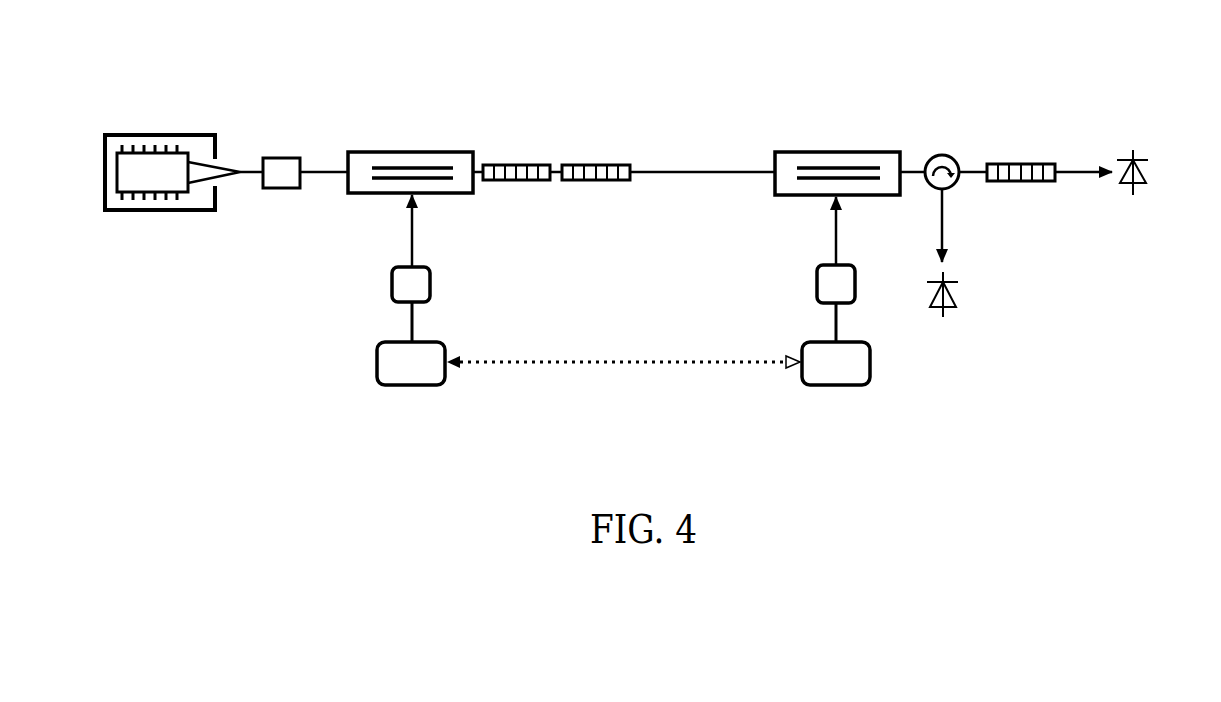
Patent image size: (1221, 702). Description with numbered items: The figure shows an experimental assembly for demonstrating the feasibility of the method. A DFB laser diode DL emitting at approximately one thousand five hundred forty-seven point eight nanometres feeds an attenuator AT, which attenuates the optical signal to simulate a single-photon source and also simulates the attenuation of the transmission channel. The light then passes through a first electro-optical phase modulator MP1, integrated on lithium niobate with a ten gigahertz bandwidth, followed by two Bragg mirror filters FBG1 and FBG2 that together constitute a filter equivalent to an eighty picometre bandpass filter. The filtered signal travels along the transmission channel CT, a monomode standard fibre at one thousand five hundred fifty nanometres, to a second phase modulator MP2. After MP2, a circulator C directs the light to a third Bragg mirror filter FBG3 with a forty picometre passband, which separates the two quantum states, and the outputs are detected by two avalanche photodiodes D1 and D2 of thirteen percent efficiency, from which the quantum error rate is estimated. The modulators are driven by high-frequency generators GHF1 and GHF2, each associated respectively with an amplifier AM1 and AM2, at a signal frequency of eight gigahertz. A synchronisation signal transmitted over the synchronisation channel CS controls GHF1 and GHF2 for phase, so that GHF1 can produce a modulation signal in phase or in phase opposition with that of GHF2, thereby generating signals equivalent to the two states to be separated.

The laser diode DL is at (172, 150).
The attenuator AT is at (283, 139).
The phase modulator MP1 is at (410, 142).
The Bragg mirror filter FBG1 is at (518, 135).
The Bragg mirror filter FBG2 is at (599, 135).
The transmission channel CT is at (702, 195).
The phase modulator MP2 is at (837, 143).
The circulator C is at (942, 154).
The Bragg mirror filter FBG3 is at (1024, 136).
The avalanche photodiode D1 is at (1161, 172).
The avalanche photodiode D2 is at (971, 294).
The amplifier AM1 is at (450, 268).
The amplifier AM2 is at (796, 269).
The high-frequency generator GHF1 is at (418, 389).
The high-frequency generator GHF2 is at (845, 389).
The synchronisation channel CS is at (623, 385).